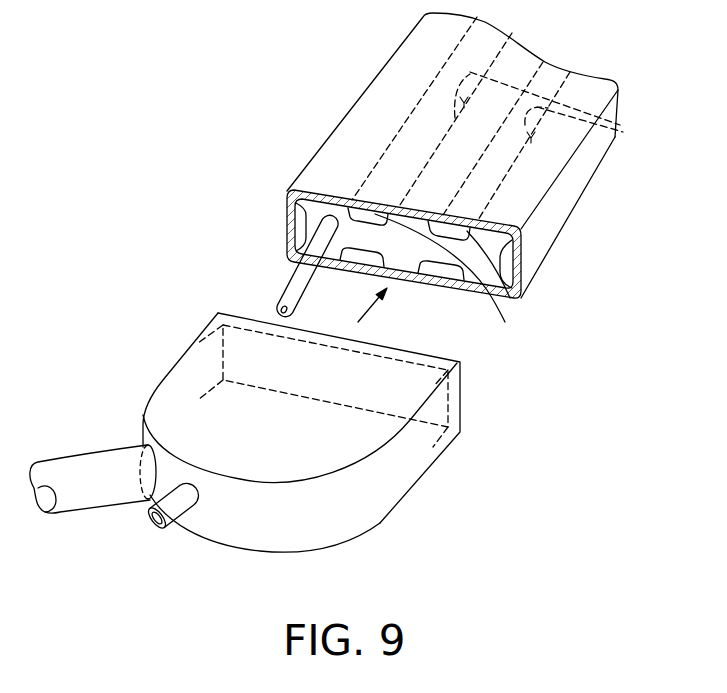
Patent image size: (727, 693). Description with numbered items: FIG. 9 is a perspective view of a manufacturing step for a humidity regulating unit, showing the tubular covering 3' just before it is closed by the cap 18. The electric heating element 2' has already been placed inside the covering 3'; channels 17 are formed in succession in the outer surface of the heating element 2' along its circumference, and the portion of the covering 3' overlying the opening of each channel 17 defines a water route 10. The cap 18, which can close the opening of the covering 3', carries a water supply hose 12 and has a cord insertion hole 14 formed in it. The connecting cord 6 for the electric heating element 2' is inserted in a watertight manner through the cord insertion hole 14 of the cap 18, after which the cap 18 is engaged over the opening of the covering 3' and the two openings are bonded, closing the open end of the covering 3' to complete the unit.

The covering 3' is at (452, 154).
The electric heating element 2' is at (384, 218).
The connecting cord 6 is at (297, 271).
The water routes 10 is at (505, 322).
The channels 17 is at (625, 128).
The water supply hose 12 is at (95, 490).
The cord insertion hole 14 is at (157, 528).
The cap 18 is at (353, 513).